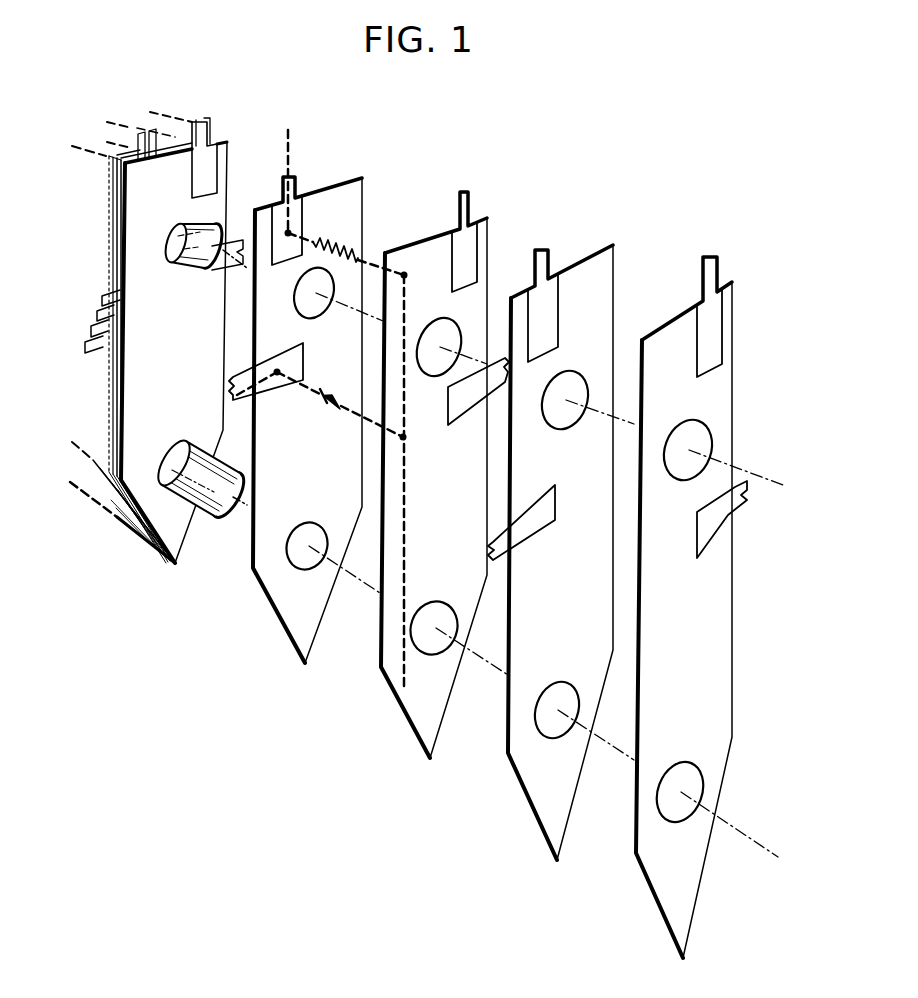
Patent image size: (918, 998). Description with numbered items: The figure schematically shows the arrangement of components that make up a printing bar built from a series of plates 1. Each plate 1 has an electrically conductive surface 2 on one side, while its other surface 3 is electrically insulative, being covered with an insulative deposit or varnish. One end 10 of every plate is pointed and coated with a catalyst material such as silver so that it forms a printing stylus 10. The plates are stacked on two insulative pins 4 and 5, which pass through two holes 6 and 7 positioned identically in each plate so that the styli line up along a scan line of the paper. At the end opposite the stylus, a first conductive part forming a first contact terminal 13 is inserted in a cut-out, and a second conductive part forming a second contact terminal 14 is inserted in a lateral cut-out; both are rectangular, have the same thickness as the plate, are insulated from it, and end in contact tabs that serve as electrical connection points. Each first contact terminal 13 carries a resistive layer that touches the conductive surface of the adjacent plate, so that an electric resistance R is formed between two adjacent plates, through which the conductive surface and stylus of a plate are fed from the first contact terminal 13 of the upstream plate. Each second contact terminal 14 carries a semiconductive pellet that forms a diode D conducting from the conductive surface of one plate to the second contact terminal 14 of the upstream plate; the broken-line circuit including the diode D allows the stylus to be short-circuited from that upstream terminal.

The plates 1 is at (370, 450).
The electrically conductive surface 2 is at (380, 634).
The insulative surface 3 is at (300, 664).
The insulative pin 4 is at (197, 246).
The insulative pin 5 is at (217, 490).
The hole 6 is at (304, 294).
The hole 7 is at (297, 567).
The printing stylus 10 is at (520, 790).
The first contact terminal 13 is at (296, 214).
The second contact terminal 14 is at (460, 402).
The electric resistance R is at (341, 249).
The diode D is at (330, 410).